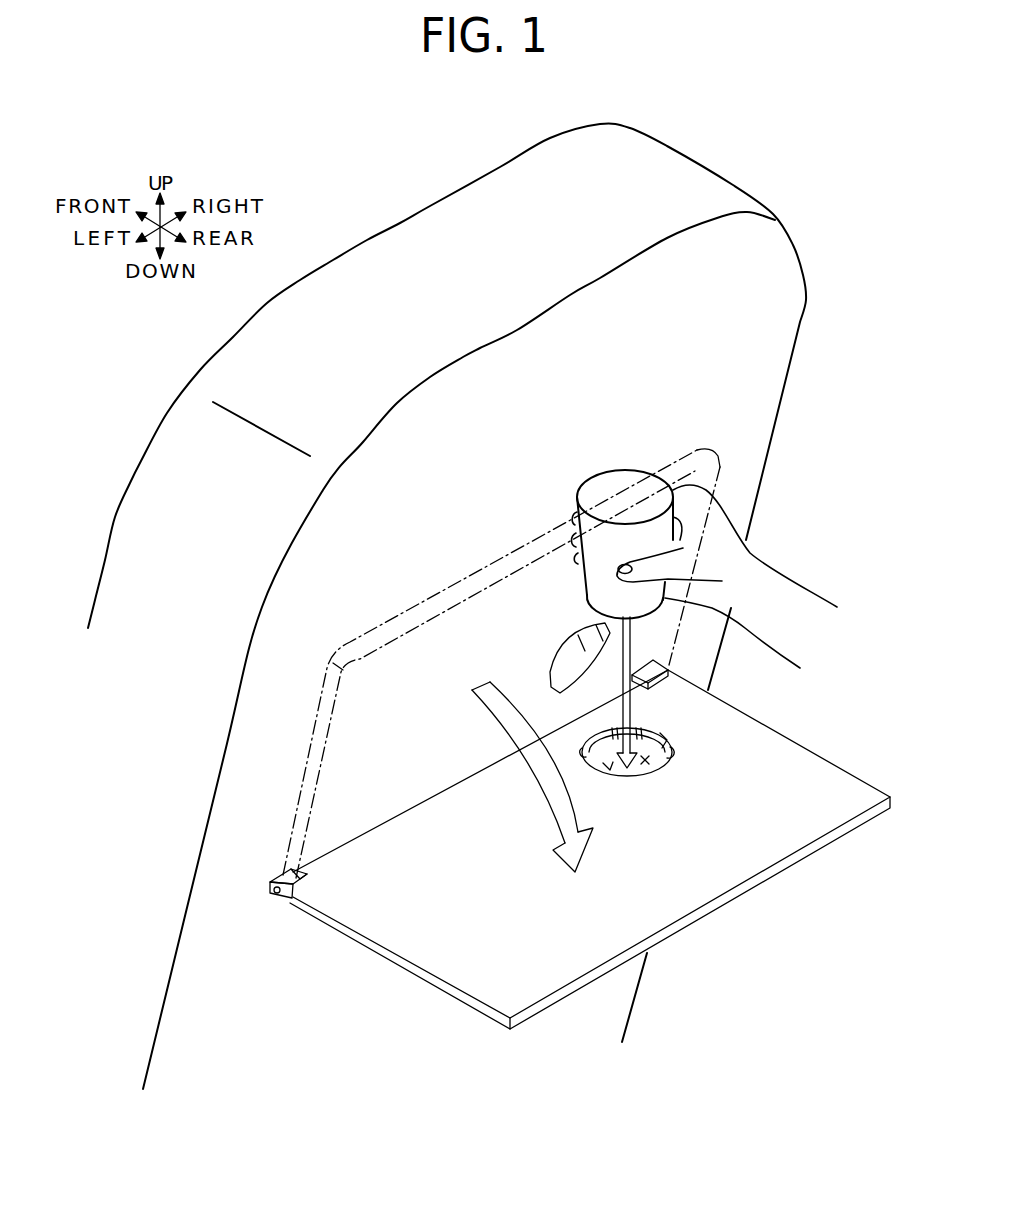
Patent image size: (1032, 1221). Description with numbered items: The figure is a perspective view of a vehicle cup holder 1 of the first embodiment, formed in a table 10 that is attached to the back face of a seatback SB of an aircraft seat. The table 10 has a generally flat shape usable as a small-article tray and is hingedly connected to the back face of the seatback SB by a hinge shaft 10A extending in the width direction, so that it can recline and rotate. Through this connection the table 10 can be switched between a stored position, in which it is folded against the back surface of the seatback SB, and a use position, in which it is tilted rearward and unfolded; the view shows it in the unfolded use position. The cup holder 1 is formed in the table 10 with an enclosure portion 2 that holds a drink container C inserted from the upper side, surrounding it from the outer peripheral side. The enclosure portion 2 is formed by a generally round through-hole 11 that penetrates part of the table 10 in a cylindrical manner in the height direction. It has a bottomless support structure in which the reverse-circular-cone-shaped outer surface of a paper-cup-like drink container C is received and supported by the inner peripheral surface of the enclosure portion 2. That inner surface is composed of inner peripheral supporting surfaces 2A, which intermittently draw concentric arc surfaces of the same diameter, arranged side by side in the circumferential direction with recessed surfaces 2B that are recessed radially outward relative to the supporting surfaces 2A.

The seatback SB is at (724, 351).
The drink container C is at (647, 536).
The table 10 is at (805, 786).
The hinge shaft 10A is at (280, 893).
The cup holder 1 is at (674, 699).
The enclosure portion 2 is at (660, 720).
The inner peripheral supporting surface 2A is at (664, 742).
The recessed surface 2B is at (593, 745).
The through-hole 11 is at (646, 765).